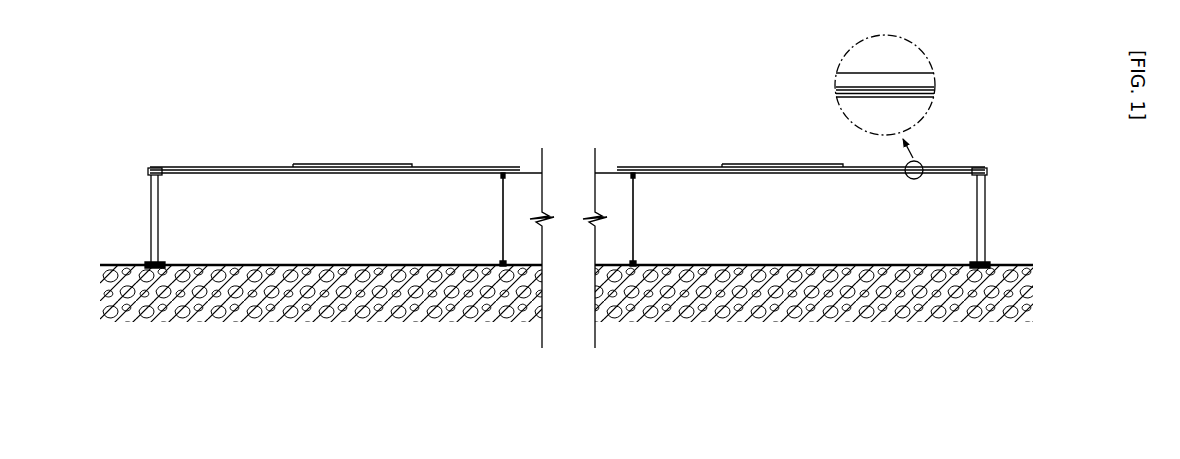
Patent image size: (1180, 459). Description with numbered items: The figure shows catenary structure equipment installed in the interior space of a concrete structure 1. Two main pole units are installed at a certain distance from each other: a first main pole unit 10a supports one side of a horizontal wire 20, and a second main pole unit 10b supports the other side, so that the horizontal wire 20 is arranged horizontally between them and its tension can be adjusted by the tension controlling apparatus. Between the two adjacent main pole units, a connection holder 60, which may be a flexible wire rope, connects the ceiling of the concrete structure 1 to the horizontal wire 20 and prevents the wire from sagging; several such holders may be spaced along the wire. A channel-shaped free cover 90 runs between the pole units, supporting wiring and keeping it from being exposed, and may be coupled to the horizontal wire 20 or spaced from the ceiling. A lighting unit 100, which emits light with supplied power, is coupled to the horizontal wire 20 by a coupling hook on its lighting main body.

The concrete structure 1 is at (847, 333).
The first main pole unit 10a is at (991, 220).
The second main pole unit 10b is at (140, 220).
The horizontal wire 20 is at (851, 101).
The connection holder 60 is at (643, 204).
The free cover 90 is at (854, 69).
The lighting unit 100 is at (747, 157).